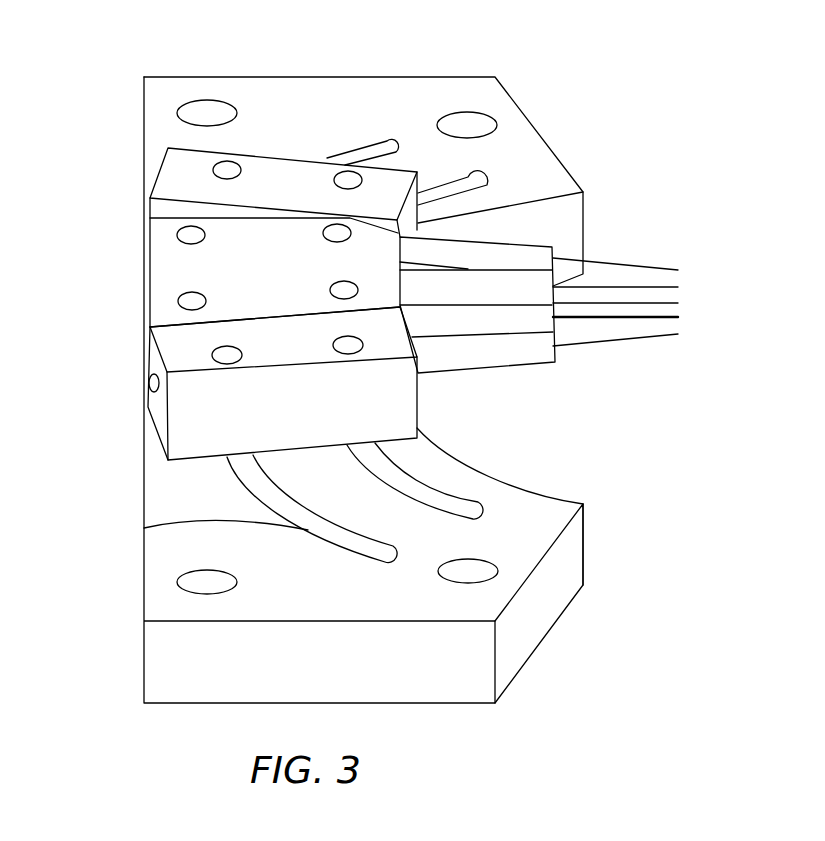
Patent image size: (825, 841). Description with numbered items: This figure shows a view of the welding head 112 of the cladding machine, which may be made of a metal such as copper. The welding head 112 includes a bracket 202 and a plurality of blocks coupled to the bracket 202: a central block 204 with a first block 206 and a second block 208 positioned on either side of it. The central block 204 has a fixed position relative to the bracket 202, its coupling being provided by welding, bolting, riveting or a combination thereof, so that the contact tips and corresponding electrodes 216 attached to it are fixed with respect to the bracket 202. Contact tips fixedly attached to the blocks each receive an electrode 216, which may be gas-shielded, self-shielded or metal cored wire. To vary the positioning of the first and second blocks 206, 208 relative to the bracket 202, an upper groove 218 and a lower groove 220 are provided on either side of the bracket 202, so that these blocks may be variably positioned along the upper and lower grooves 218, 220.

The welding head 112 is at (427, 370).
The bracket 202 is at (393, 93).
The central block 204 is at (160, 263).
The first block 206 is at (163, 343).
The second block 208 is at (172, 174).
The electrode 216 is at (697, 262).
The upper groove 218 is at (358, 150).
The lower groove 220 is at (480, 190).